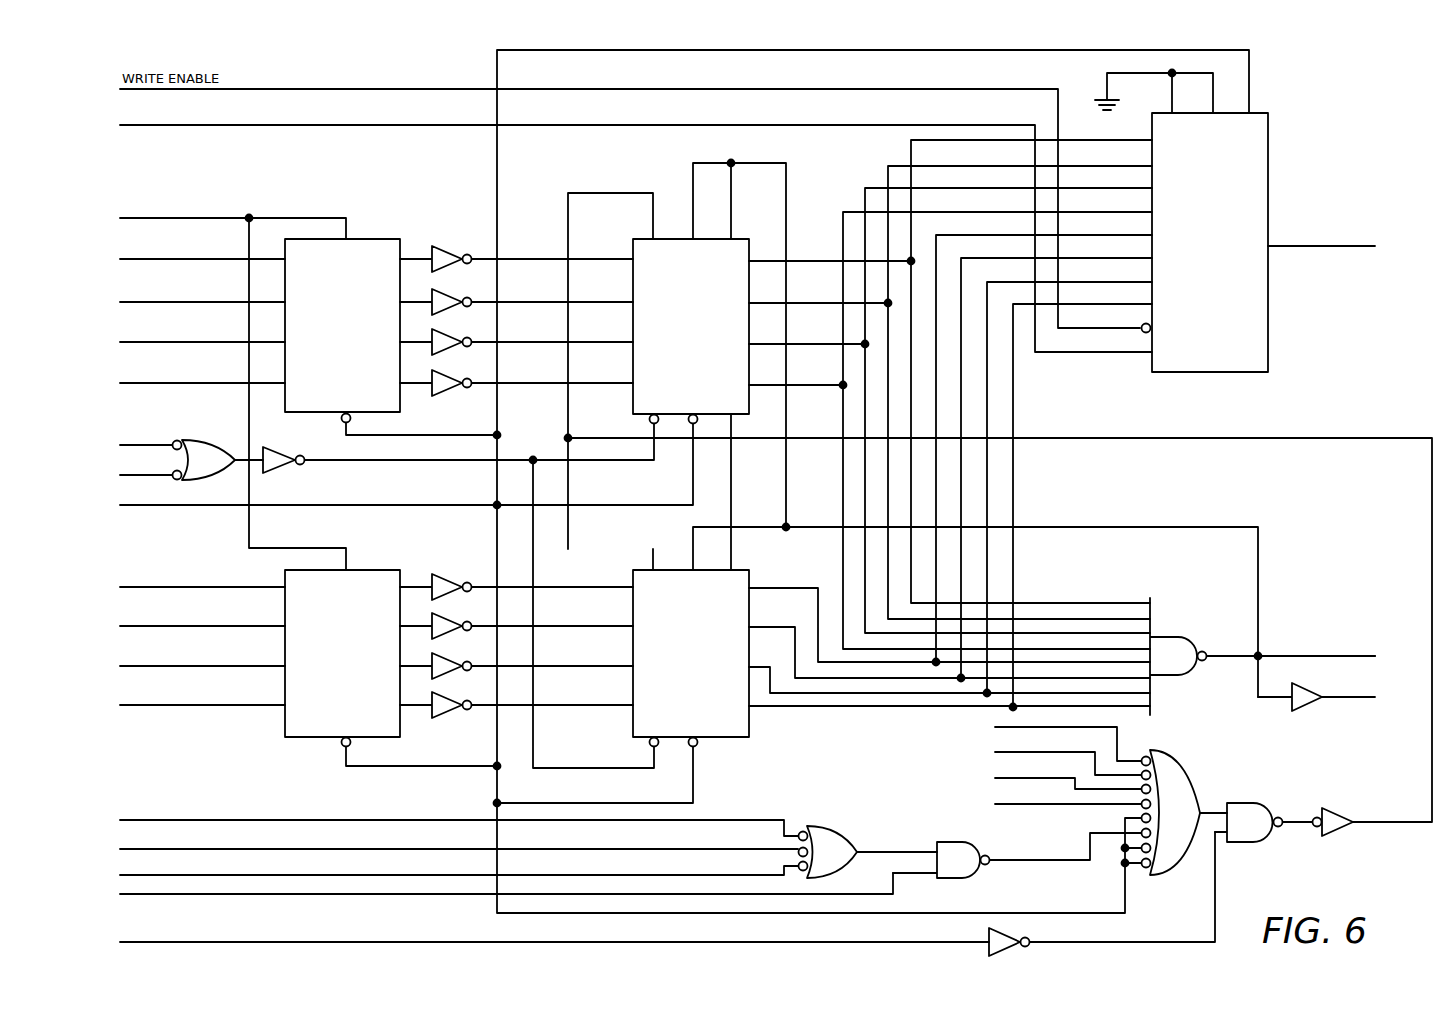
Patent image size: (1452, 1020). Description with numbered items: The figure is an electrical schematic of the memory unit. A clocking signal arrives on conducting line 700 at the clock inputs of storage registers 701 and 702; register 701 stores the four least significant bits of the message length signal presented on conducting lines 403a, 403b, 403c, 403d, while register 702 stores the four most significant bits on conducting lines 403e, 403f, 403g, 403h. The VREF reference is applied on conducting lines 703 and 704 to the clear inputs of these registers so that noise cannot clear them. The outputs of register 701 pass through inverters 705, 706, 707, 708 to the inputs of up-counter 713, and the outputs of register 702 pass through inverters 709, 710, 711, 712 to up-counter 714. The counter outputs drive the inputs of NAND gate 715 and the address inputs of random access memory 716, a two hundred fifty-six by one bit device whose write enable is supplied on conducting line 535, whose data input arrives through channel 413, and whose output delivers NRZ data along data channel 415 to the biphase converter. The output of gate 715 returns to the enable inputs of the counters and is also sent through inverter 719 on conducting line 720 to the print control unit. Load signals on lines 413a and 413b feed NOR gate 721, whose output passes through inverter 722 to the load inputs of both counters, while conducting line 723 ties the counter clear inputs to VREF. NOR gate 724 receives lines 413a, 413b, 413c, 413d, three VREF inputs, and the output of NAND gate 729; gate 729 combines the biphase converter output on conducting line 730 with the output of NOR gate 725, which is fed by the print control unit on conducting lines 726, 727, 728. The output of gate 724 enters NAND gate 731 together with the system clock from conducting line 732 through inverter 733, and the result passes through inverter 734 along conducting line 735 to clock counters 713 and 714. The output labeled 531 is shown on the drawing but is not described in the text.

The conducting line 535 is at (390, 90).
The channel 413 is at (180, 124).
The conducting line 700 is at (171, 229).
The conducting line 403a is at (181, 270).
The conducting line 403b is at (182, 312).
The conducting line 403c is at (182, 352).
The conducting line 403d is at (187, 392).
The conducting line 403e is at (180, 585).
The conducting line 403f is at (174, 624).
The conducting line 403g is at (180, 660).
The conducting line 403h is at (160, 692).
The conducting line 413a is at (130, 443).
The conducting line 413b is at (130, 476).
The conducting line 413c is at (1048, 740).
The conducting line 413d is at (1022, 812).
The storage register 701 is at (356, 330).
The storage register 702 is at (356, 655).
The conducting line 703 is at (338, 764).
The conducting line 704 is at (428, 434).
The inverter 705 is at (456, 252).
The inverter 706 is at (456, 297).
The inverter 707 is at (456, 339).
The inverter 708 is at (456, 380).
The inverter 709 is at (452, 581).
The inverter 710 is at (452, 626).
The inverter 711 is at (452, 664).
The inverter 712 is at (452, 704).
The up-counter 713 is at (701, 330).
The up-counter 714 is at (701, 655).
The NAND gate 715 is at (1177, 635).
The random access memory 716 is at (1240, 313).
The inverter 719 is at (1291, 714).
The conducting line 720 is at (1363, 712).
The NOR gate 721 is at (222, 470).
The inverter 722 is at (282, 452).
The conducting line 723 is at (322, 500).
The NOR gate 724 is at (1184, 792).
The NOR gate 725 is at (830, 826).
The conducting line 726 is at (188, 810).
The conducting line 727 is at (198, 844).
The conducting line 728 is at (196, 872).
The NAND gate 729 is at (955, 844).
The conducting line 730 is at (165, 897).
The NAND gate 731 is at (1249, 804).
The conducting line 732 is at (164, 942).
The inverter 733 is at (1036, 948).
The inverter 734 is at (1336, 804).
The conducting line 735 is at (592, 436).
The data channel 415 is at (1349, 244).
The output line 531 is at (1342, 654).